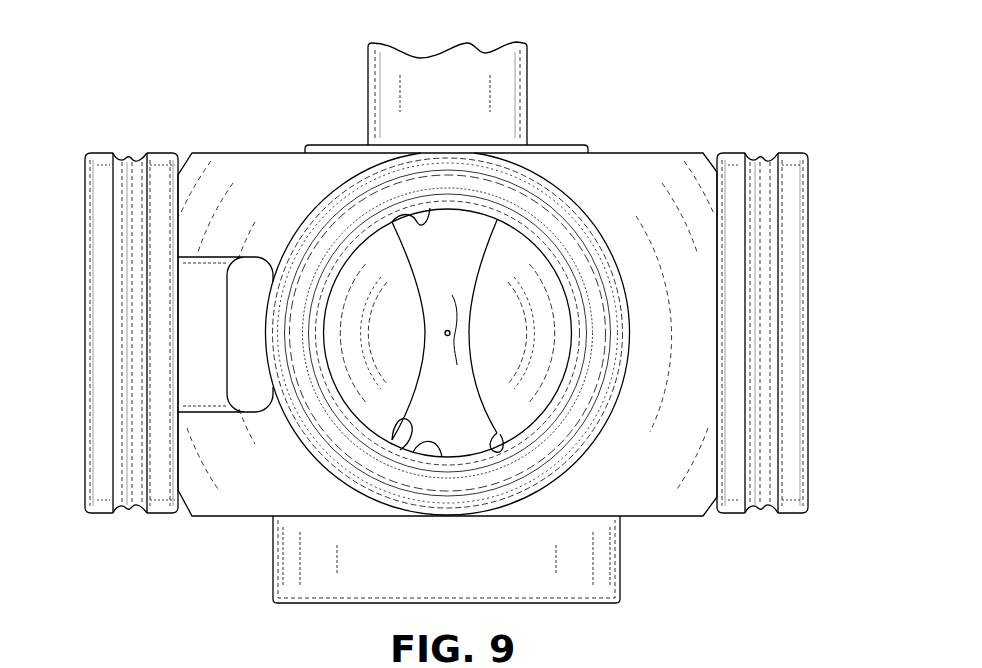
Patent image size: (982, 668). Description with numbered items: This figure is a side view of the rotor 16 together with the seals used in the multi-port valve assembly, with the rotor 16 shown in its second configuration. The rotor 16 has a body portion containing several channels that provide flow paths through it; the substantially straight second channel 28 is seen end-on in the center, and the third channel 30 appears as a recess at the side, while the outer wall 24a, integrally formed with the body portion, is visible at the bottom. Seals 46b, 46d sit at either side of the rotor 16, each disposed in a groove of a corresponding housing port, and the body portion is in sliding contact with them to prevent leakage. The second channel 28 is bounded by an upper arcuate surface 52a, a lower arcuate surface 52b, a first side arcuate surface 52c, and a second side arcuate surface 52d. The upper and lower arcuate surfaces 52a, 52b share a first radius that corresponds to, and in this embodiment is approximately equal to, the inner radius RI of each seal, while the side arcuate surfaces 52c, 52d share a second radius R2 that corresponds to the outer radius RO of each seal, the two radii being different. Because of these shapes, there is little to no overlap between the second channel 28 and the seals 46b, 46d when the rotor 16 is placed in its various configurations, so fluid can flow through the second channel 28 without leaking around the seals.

The rotor 16 is at (263, 188).
The outer wall 24a is at (601, 590).
The second channel 28 is at (466, 238).
The third channel 30 is at (195, 343).
The seal 46b is at (157, 162).
The seal 46d is at (735, 163).
The upper arcuate surface 52a is at (410, 218).
The lower arcuate surface 52b is at (403, 437).
The first side arcuate surface 52c is at (433, 446).
The second side arcuate surface 52d is at (500, 450).
The outer radius RO is at (315, 210).
The inner radius RI is at (448, 212).
The second radius R2 is at (470, 333).